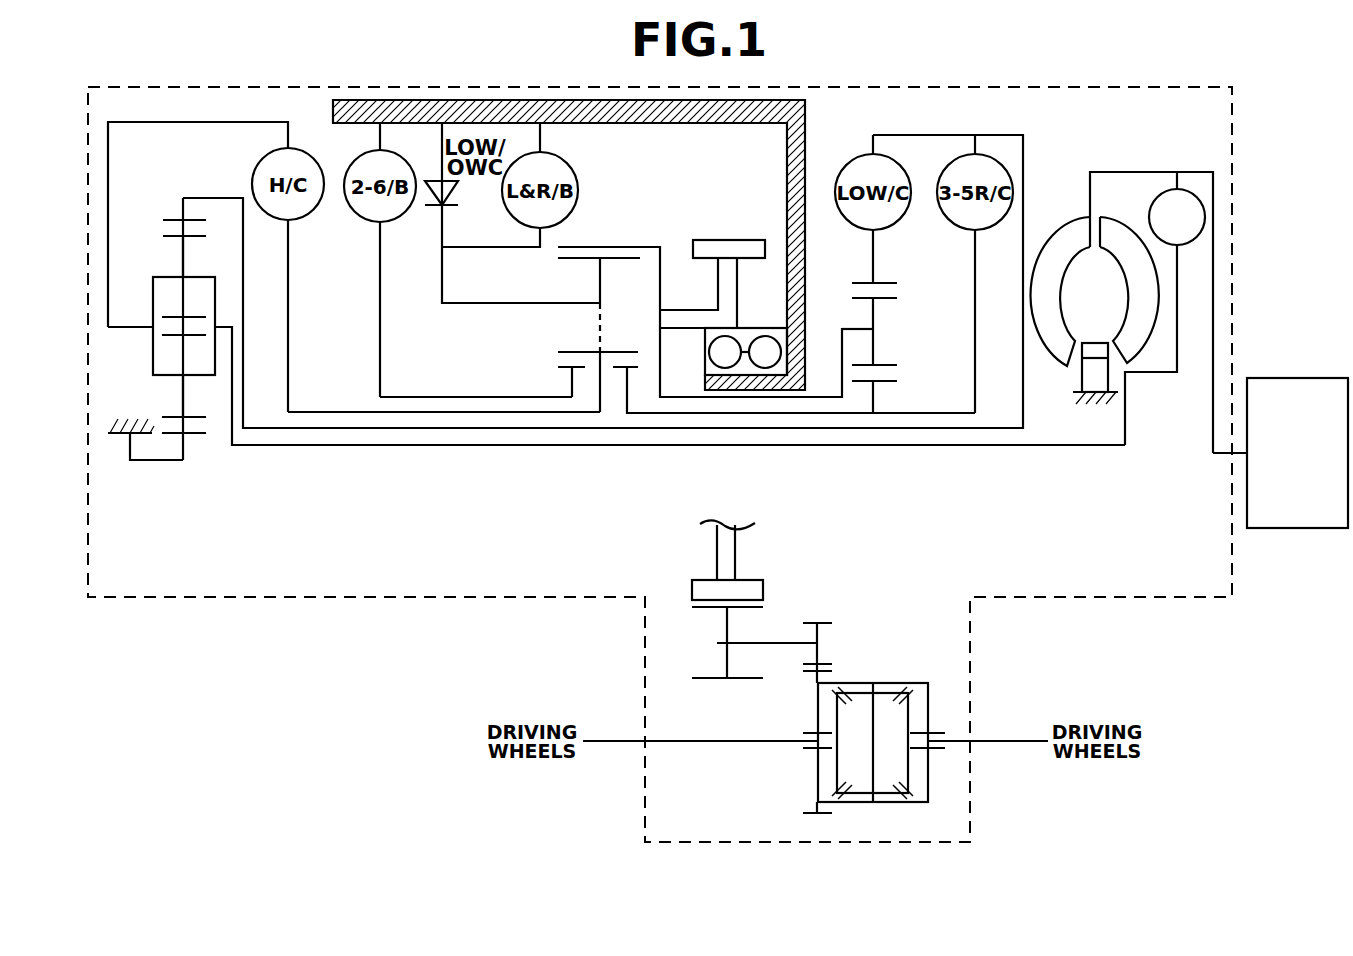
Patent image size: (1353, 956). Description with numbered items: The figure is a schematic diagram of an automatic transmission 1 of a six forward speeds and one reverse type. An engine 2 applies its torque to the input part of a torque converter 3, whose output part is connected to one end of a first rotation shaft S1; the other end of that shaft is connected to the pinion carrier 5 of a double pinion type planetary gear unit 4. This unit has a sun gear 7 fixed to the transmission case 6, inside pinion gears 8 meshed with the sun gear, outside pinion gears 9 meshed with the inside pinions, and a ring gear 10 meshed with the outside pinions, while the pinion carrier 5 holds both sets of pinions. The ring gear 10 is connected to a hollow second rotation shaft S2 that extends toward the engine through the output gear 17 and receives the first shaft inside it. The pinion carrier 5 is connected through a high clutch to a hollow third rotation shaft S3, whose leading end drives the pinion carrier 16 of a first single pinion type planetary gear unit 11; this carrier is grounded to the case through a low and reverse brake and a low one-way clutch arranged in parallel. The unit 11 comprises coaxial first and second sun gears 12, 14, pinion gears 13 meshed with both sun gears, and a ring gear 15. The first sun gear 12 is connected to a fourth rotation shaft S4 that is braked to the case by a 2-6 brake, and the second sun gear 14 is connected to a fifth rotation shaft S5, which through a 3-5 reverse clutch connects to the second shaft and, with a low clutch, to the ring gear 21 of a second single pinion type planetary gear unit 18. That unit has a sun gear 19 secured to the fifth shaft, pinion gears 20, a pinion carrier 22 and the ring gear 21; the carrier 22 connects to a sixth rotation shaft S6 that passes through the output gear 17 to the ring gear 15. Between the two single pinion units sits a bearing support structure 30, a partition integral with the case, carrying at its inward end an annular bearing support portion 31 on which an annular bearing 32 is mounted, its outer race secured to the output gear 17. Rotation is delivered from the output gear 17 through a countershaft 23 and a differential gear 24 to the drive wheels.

The automatic transmission 1 is at (1247, 140).
The engine 2 is at (1297, 378).
The torque converter 3 is at (1135, 150).
The double pinion type planetary gear unit 4 is at (614, 317).
The pinion carrier 5 is at (153, 354).
The transmission case 6 is at (118, 433).
The sun gear 7 is at (183, 460).
The inside pinion gears 8 is at (183, 394).
The outside pinion gears 9 is at (183, 258).
The ring gear 10 is at (183, 206).
The first single pinion type planetary gear unit 11 is at (739, 327).
The first sun gear 12 is at (572, 377).
The pinion gears 13 is at (600, 286).
The second sun gear 14 is at (627, 386).
The ring gear 15 is at (600, 246).
The pinion carrier 16 is at (482, 307).
The output gear 17 is at (735, 240).
The second single pinion type planetary gear unit 18 is at (895, 268).
The sun gear 19 is at (873, 398).
The pinion gears 20 is at (873, 350).
The ring gear 21 is at (873, 250).
The pinion carrier 22 is at (848, 329).
The countershaft 23 is at (780, 643).
The differential gear 24 is at (893, 660).
The bearing support structure 30 is at (818, 135).
The annular bearing support portion 31 is at (757, 382).
The annular bearing 32 is at (725, 360).
The first rotation shaft S1 is at (318, 447).
The second rotation shaft S2 is at (356, 430).
The third rotation shaft S3 is at (395, 414).
The fourth rotation shaft S4 is at (435, 398).
The fifth rotation shaft S5 is at (938, 414).
The sixth rotation shaft S6 is at (805, 400).